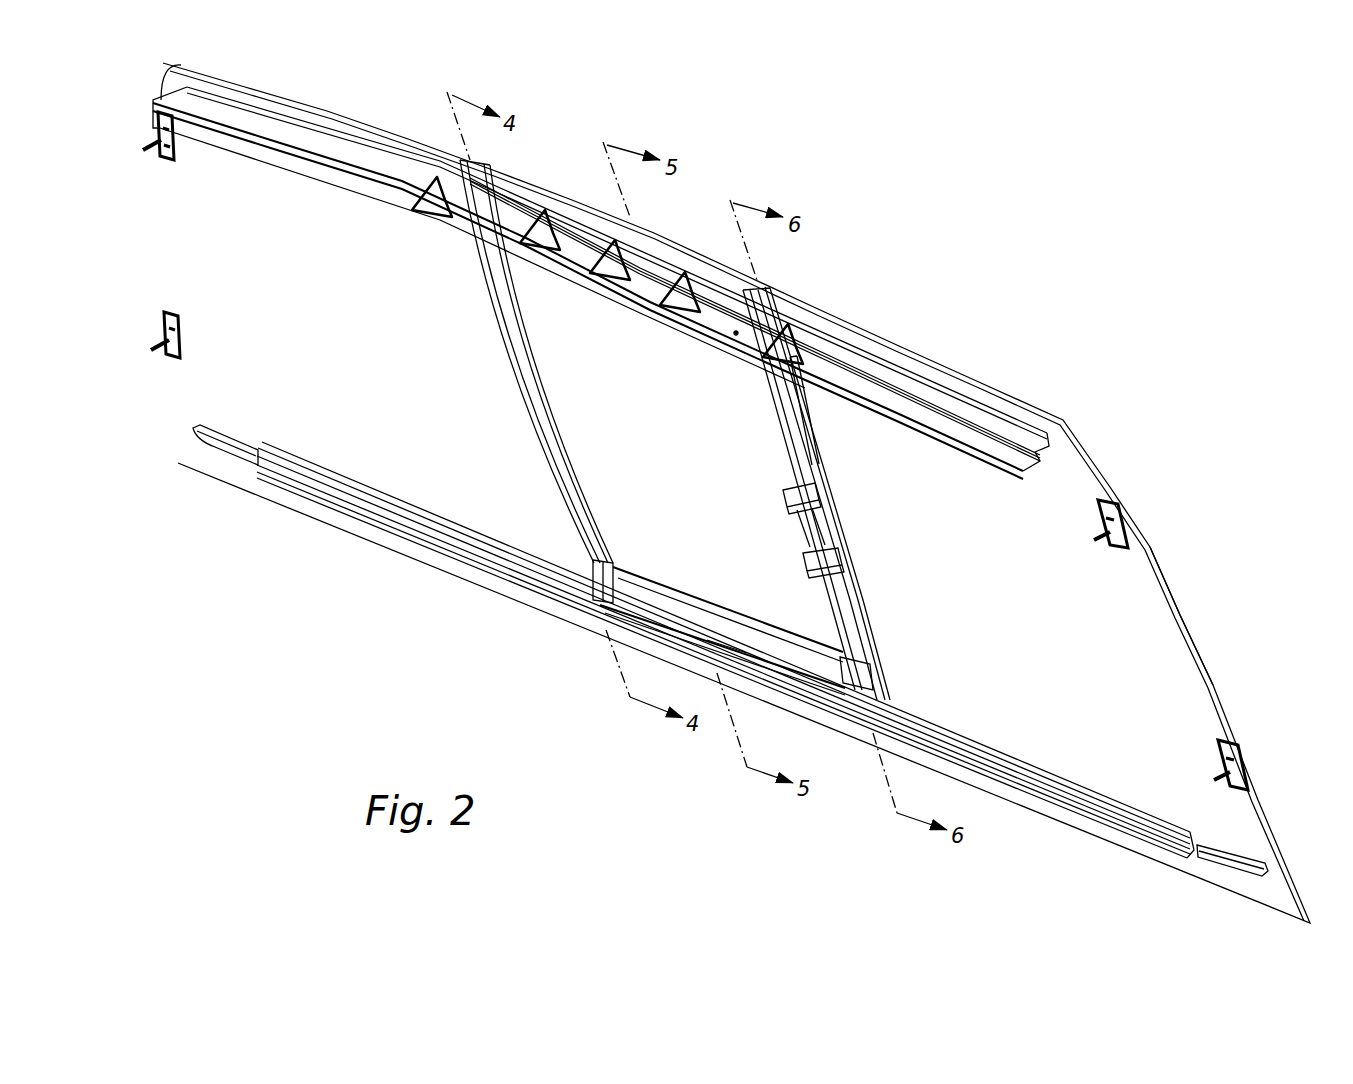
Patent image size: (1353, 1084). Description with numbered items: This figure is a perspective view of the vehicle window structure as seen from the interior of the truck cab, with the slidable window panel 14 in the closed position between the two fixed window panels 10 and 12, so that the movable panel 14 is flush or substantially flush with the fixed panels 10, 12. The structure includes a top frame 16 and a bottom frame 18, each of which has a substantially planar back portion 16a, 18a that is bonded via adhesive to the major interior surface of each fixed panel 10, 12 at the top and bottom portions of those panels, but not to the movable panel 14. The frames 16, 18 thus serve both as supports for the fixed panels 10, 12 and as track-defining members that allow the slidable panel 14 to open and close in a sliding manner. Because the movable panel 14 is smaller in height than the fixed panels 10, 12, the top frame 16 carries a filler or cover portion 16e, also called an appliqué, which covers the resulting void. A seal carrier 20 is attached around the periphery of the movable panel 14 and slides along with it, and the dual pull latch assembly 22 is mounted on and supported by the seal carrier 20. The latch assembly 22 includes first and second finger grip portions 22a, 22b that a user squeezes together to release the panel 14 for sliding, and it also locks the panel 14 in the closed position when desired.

The fixed window panel 10 is at (1128, 630).
The fixed window panel 12 is at (218, 252).
The movable window panel 14 is at (695, 540).
The top frame 16 is at (625, 271).
The back portion 16a is at (367, 140).
The filler or cover portion 16e is at (512, 197).
The bottom frame 18 is at (754, 633).
The back portion 18a is at (215, 430).
The seal carrier 20 is at (630, 560).
The latch assembly 22 is at (763, 489).
The first finger grip portion 22a is at (787, 485).
The second finger grip portion 22b is at (812, 572).